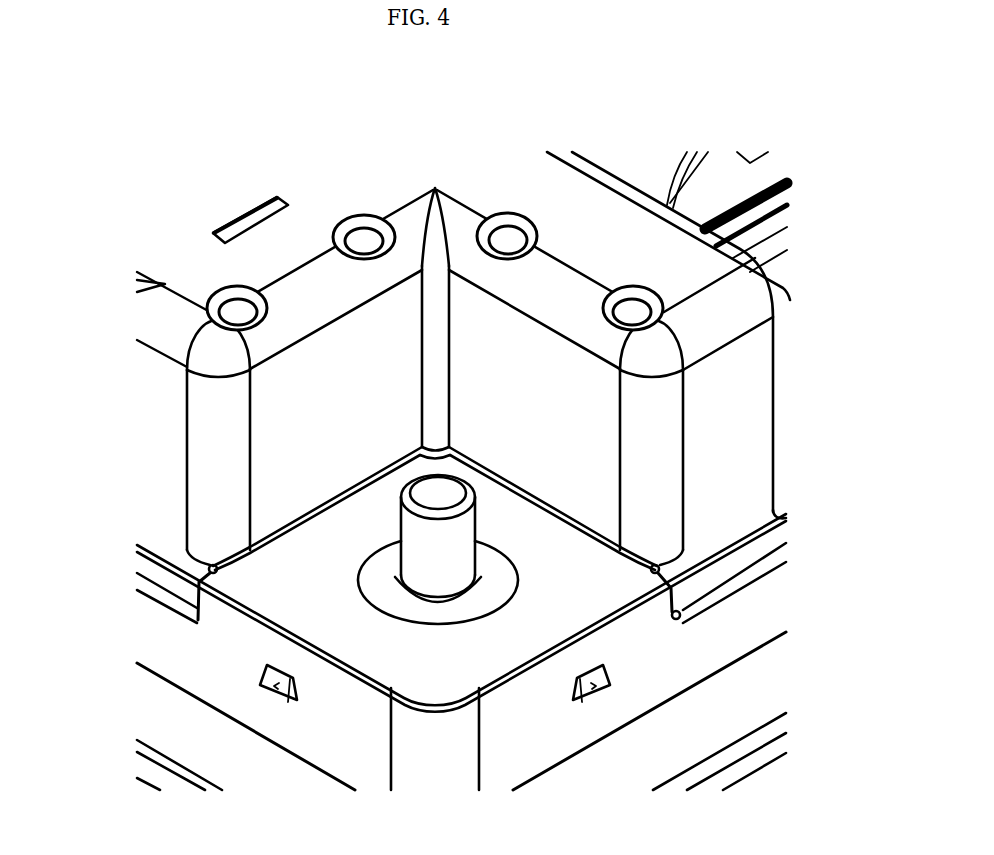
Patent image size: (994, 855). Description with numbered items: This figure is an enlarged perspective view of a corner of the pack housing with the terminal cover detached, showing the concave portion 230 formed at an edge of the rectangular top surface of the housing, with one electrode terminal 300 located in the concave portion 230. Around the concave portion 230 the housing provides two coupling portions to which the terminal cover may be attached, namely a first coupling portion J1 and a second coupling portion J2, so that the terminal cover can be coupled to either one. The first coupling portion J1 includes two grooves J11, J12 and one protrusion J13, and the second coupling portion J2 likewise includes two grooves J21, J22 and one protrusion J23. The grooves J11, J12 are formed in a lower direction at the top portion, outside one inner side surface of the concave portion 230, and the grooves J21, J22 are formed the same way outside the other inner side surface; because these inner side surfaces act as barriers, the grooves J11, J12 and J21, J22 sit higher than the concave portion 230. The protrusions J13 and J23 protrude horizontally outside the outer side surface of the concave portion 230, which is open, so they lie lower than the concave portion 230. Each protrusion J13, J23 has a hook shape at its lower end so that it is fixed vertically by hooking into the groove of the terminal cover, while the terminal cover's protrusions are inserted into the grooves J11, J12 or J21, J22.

The first coupling portion J1 is at (252, 133).
The groove of the first coupling portion J11 is at (231, 288).
The groove of the first coupling portion J12 is at (353, 216).
The protrusion of the first coupling portion J13 is at (591, 696).
The second coupling portion J2 is at (630, 114).
The groove of the second coupling portion J21 is at (508, 214).
The groove of the second coupling portion J22 is at (633, 287).
The protrusion of the second coupling portion J23 is at (264, 688).
The concave portion 230 is at (322, 560).
The electrode terminal 300 is at (452, 540).